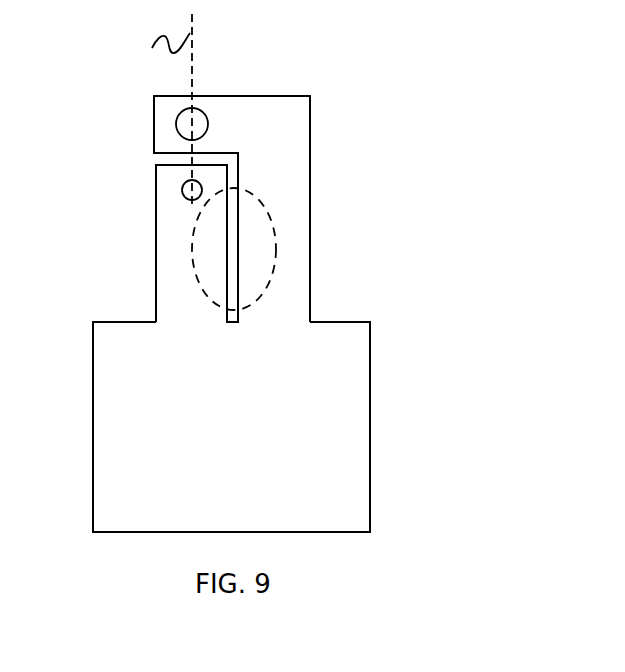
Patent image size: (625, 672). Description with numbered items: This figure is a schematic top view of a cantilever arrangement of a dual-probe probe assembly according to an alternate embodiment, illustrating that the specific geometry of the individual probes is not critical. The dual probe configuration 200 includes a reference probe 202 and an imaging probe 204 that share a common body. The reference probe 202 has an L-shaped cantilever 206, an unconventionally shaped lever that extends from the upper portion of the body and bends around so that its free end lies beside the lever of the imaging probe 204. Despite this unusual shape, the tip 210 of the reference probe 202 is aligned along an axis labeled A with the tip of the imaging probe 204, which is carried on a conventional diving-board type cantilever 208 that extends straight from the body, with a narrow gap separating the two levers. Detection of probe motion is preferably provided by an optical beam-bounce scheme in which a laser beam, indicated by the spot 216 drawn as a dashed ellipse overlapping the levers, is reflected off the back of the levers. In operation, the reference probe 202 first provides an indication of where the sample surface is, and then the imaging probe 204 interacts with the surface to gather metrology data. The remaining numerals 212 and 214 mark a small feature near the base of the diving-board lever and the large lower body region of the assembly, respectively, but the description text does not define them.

The dual probe configuration 200 is at (415, 461).
The reference probe 202 is at (335, 215).
The imaging probe 204 is at (136, 307).
The L-shaped cantilever 206 is at (290, 124).
The diving-board type cantilever 208 is at (168, 237).
The tip 210 is at (198, 124).
The small bore 212 is at (184, 190).
The body 214 is at (337, 443).
The spot 216 is at (278, 250).